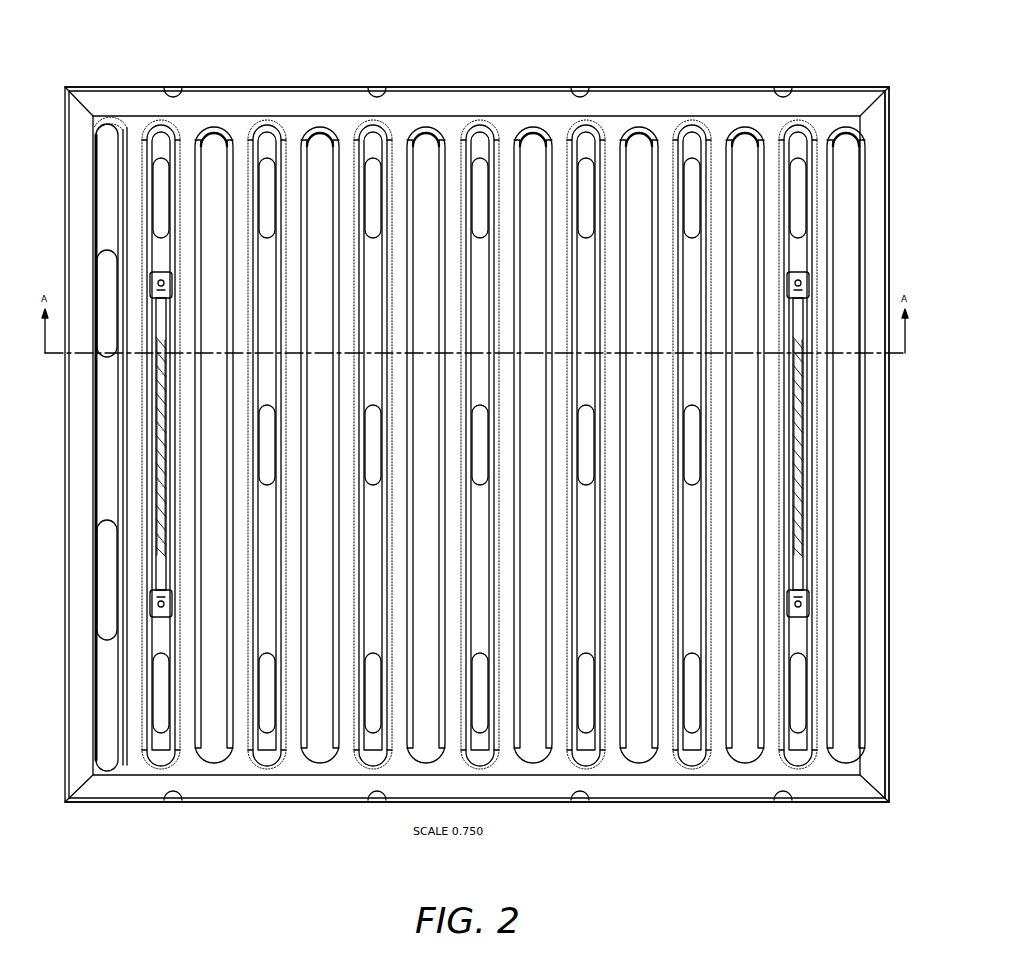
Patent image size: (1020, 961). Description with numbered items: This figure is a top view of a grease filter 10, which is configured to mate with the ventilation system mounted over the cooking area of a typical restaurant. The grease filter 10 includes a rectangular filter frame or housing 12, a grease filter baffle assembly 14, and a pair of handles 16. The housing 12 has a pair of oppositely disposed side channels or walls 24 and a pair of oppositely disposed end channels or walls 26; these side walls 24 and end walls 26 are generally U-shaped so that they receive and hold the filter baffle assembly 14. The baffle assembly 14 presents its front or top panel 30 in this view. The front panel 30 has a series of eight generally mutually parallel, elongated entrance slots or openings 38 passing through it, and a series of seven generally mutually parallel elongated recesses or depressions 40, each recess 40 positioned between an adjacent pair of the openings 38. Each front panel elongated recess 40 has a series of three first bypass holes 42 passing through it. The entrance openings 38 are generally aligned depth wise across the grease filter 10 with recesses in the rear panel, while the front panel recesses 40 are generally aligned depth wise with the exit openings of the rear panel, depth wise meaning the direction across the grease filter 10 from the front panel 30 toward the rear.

The grease filter 10 is at (799, 860).
The filter frame or housing 12 is at (680, 798).
The grease filter baffle assembly 14 is at (288, 768).
The handles 16 is at (800, 510).
The side channels or walls 24 is at (708, 93).
The end channels or walls 26 is at (878, 215).
The front or top panel 30 is at (818, 685).
The entrance slots or openings 38 is at (635, 124).
The elongated recesses or depressions 40 is at (482, 128).
The first bypass holes 42 is at (473, 140).